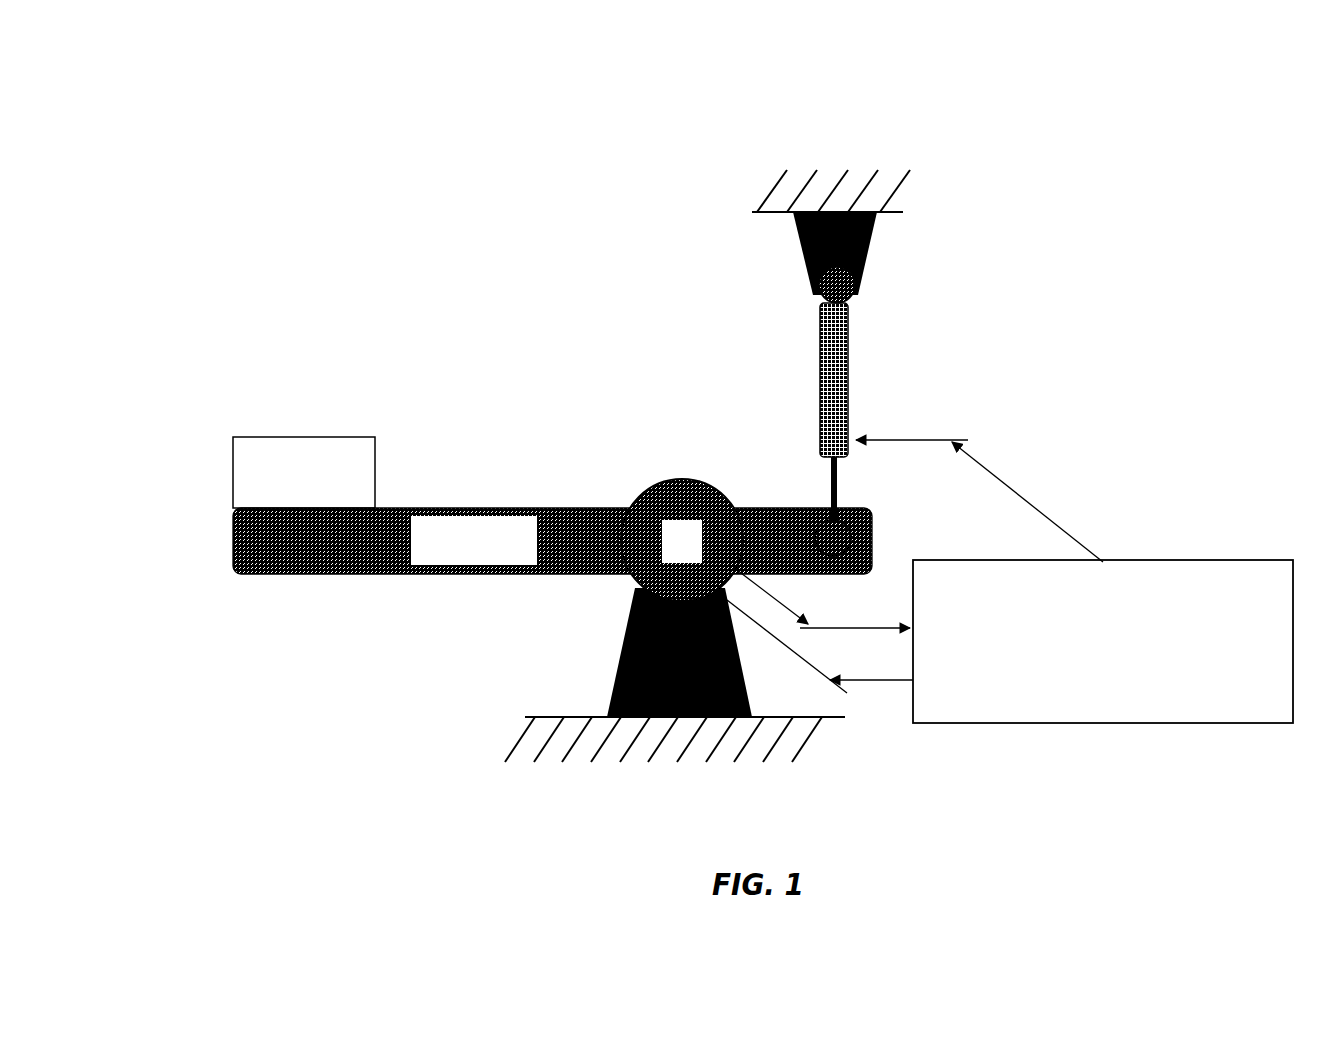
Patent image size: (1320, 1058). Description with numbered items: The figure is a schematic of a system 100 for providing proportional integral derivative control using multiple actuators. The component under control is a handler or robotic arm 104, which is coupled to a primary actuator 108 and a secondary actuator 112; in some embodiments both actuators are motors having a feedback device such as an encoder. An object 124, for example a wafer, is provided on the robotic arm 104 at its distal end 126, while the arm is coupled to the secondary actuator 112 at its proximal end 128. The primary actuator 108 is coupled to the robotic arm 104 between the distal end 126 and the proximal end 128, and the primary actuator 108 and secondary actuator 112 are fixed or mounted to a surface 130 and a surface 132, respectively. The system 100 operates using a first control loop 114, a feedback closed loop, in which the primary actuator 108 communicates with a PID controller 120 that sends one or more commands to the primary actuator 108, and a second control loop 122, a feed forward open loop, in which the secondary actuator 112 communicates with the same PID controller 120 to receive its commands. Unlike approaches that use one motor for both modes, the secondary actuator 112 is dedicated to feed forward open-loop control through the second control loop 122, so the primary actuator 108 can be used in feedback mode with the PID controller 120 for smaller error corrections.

The system 100 is at (144, 94).
The robotic arm 104 is at (548, 508).
The primary actuator 108 is at (640, 549).
The secondary actuator 112 is at (856, 333).
The first control loop 114 is at (869, 662).
The PID controller 120 is at (1220, 558).
The second control loop 122 is at (1000, 466).
The object 124 is at (279, 436).
The distal end 126 is at (247, 592).
The proximal end 128 is at (803, 488).
The surface 130 is at (544, 716).
The surface 132 is at (768, 214).